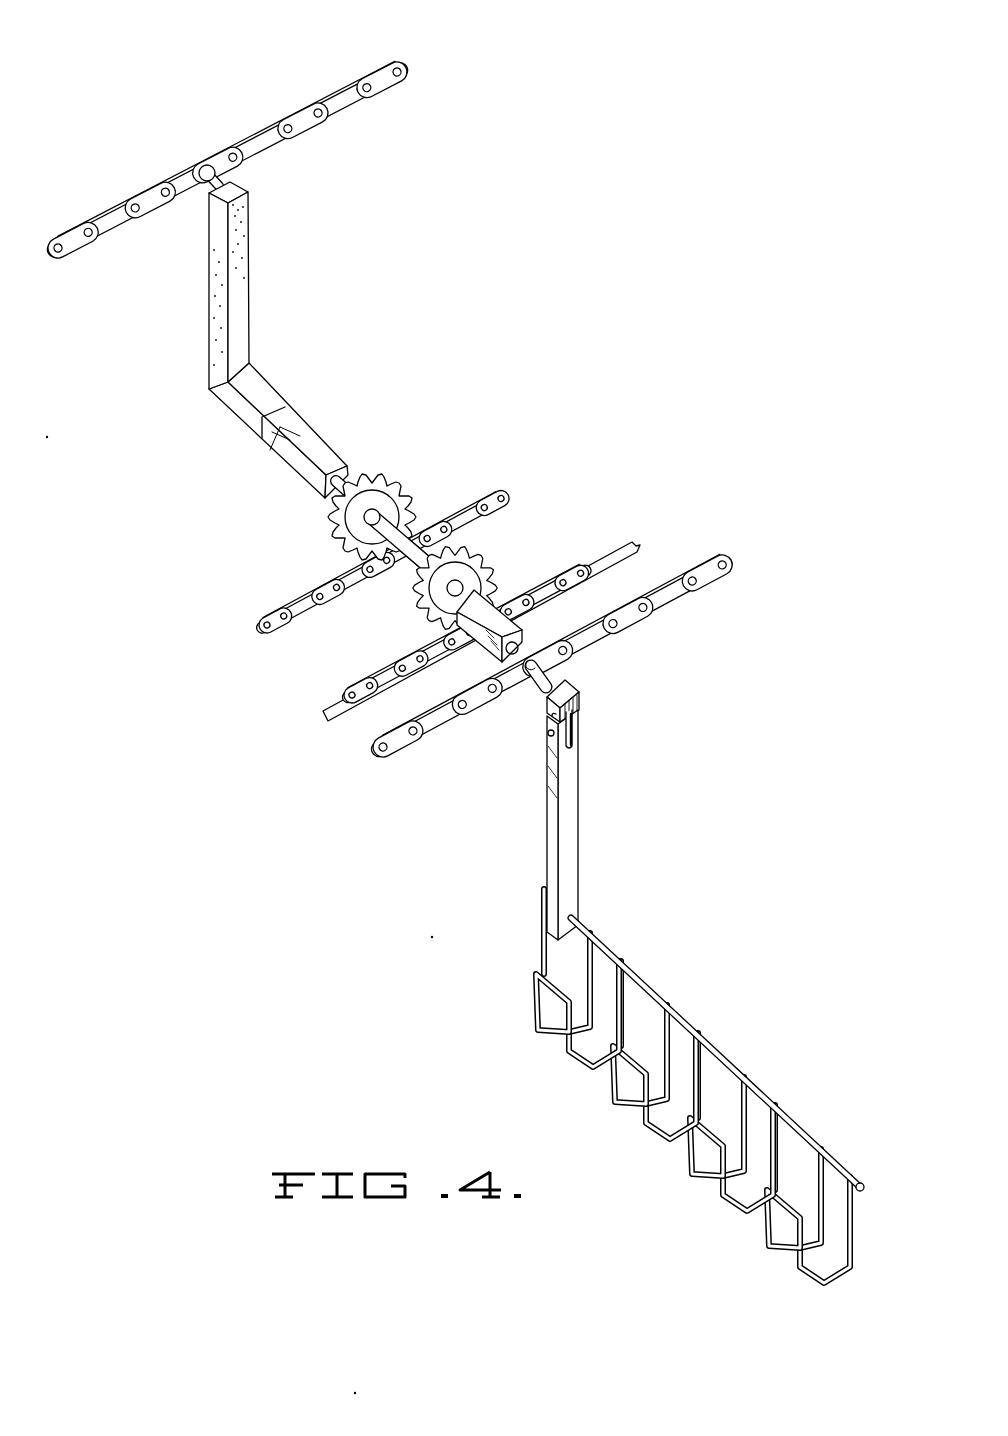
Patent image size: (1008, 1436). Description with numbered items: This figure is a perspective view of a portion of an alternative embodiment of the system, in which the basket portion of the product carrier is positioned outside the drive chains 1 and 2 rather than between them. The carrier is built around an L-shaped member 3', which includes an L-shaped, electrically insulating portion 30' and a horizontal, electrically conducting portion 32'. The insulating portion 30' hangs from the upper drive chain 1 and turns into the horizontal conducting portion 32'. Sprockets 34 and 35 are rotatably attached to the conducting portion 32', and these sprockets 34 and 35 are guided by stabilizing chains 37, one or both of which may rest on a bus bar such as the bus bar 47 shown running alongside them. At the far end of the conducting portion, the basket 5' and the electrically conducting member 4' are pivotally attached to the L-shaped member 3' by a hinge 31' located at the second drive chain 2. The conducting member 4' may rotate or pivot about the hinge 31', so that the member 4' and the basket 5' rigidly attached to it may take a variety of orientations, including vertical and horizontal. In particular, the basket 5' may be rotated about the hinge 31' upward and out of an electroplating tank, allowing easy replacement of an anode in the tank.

The drive chain 1 is at (393, 51).
The drive chain 2 is at (723, 545).
The L-shaped member 3' is at (242, 340).
The electrically insulating portion 30' is at (257, 285).
The electrically conducting portion 32' is at (278, 430).
The sprocket 34 is at (374, 473).
The sprocket 35 is at (480, 560).
The stabilizing chains 37 is at (509, 486).
The bus bar 47 is at (643, 550).
The hinge 31' is at (514, 706).
The electrically conducting member 4' is at (591, 810).
The basket 5' is at (700, 1086).